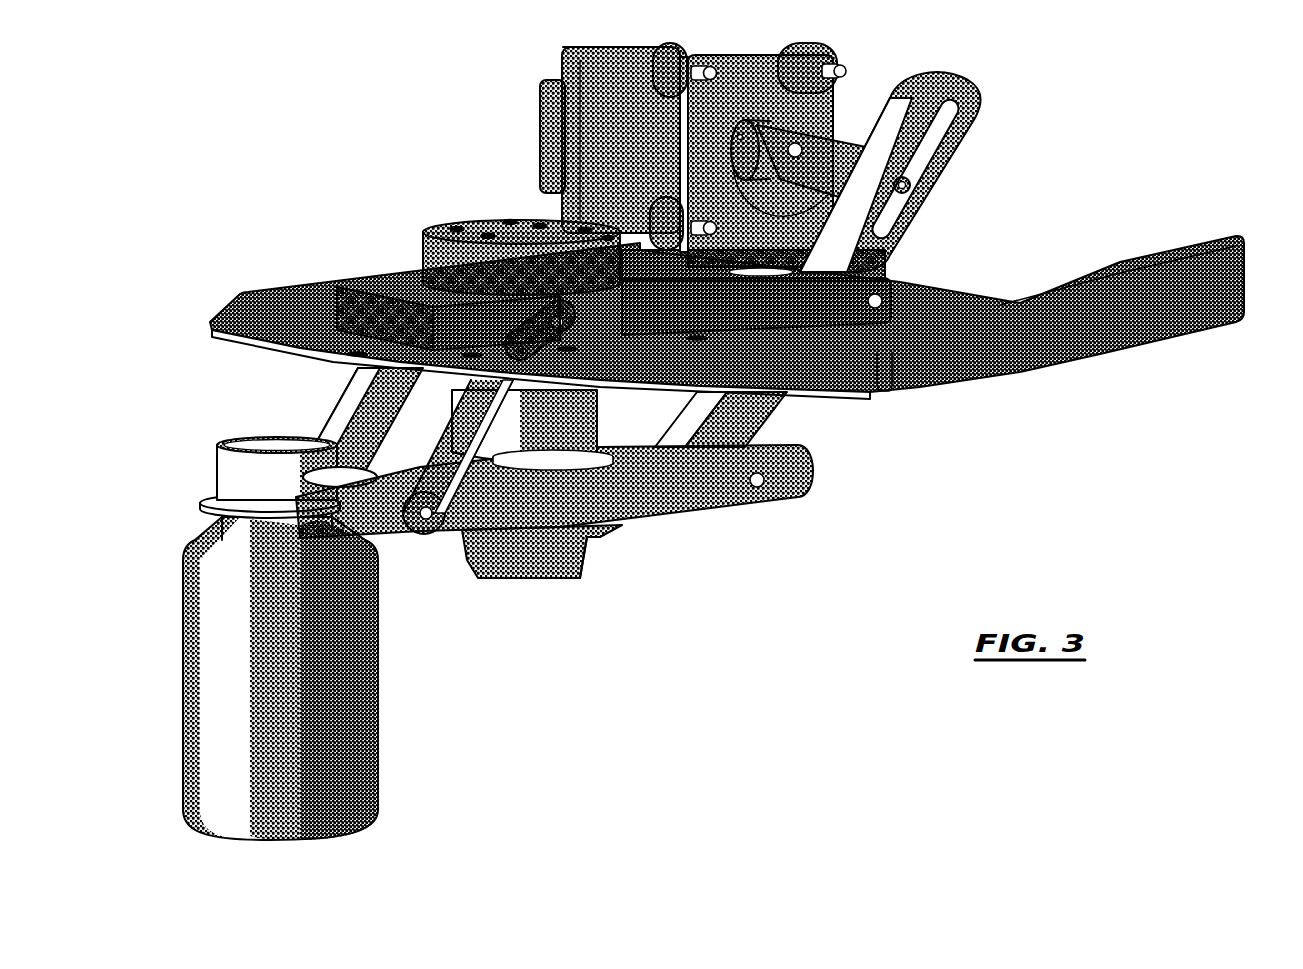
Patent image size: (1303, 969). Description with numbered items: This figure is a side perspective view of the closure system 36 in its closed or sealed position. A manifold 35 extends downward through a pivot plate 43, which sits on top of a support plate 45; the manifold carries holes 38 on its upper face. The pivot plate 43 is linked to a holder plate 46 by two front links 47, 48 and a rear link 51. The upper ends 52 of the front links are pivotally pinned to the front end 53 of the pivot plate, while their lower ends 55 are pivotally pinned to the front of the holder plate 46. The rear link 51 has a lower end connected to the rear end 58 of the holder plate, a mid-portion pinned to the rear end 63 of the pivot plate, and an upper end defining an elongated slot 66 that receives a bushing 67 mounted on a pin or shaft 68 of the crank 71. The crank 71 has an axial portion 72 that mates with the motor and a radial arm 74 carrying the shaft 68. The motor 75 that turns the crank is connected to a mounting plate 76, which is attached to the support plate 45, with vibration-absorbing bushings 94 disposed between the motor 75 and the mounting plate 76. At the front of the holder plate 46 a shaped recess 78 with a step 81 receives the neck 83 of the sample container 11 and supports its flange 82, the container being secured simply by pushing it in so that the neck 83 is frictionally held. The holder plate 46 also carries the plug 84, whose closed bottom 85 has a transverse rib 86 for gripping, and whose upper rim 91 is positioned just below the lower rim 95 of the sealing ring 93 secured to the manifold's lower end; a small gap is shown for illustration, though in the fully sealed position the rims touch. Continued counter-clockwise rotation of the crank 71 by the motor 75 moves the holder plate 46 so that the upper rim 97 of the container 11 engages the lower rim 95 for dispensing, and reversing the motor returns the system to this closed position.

The sample container 11 is at (250, 678).
The manifold 35 is at (520, 225).
The closure system 36 is at (683, 437).
The fastener holes 38 is at (517, 222).
The pivot plate 43 is at (425, 259).
The support plate 45 is at (262, 310).
The holder plate 46 is at (597, 539).
The front link 47 is at (370, 423).
The front link 48 is at (454, 501).
The rear link 51 is at (919, 157).
The upper ends of the front links 52 is at (553, 304).
The front end of the pivot plate 53 is at (373, 307).
The lower end of the front links 55 is at (430, 527).
The rear end of the holder plate 58 is at (812, 468).
The rear end of the pivot plate 63 is at (897, 283).
The elongated slot 66 is at (940, 137).
The bushing 67 is at (897, 203).
The pin or shaft 68 is at (908, 181).
The crank 71 is at (919, 157).
The axial portion 72 is at (817, 218).
The radial arm 74 is at (836, 145).
The motor 75 is at (582, 44).
The mounting plate 76 is at (685, 157).
The shaped recess 78 is at (353, 477).
The step 81 is at (290, 536).
The flange 82 is at (212, 490).
The neck 83 is at (227, 527).
The plug 84 is at (517, 584).
The closed bottom 85 is at (598, 540).
The transverse rib 86 is at (555, 604).
The upper rim 91 is at (597, 504).
The sealing ring 93 is at (620, 414).
The vibration-absorbing bushings 94 is at (662, 72).
The lower rim 95 is at (576, 455).
The upper rim of the container 97 is at (218, 445).